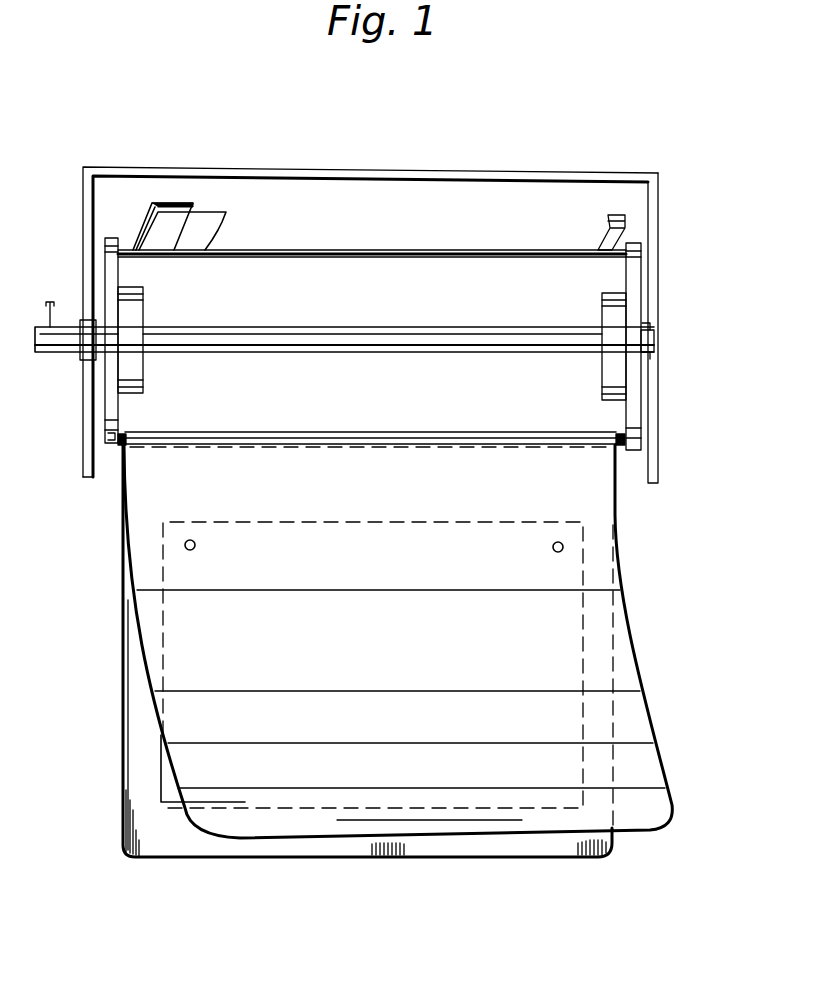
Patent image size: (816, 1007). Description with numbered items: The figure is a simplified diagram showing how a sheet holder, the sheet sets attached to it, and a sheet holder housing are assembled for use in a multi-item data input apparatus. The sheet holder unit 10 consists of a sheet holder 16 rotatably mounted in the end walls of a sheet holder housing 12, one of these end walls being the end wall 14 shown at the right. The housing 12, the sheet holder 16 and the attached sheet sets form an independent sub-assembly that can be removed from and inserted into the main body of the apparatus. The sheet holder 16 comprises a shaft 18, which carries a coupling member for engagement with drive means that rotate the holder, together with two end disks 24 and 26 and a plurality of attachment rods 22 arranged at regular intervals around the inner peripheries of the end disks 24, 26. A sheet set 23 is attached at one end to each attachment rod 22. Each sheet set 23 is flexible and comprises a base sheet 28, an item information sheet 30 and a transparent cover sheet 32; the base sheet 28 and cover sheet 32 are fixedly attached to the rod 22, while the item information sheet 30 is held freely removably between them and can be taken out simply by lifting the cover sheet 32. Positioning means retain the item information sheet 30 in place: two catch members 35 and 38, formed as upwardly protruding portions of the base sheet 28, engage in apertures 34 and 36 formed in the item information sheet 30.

The sheet holder unit 10 is at (257, 168).
The sheet holder housing 12 is at (68, 182).
The end wall 14 is at (659, 265).
The sheet holder 16 is at (483, 276).
The shaft 18 is at (278, 330).
The attachment rod 22 is at (318, 441).
The sheet set 23 is at (187, 236).
The end disk 24 is at (110, 396).
The end disk 26 is at (633, 413).
The base sheet 28 is at (183, 834).
The item information sheet 30 is at (170, 791).
The cover sheet 32 is at (658, 800).
The aperture 34 is at (196, 543).
The catch member 35 is at (195, 548).
The aperture 36 is at (553, 546).
The catch member 38 is at (555, 551).